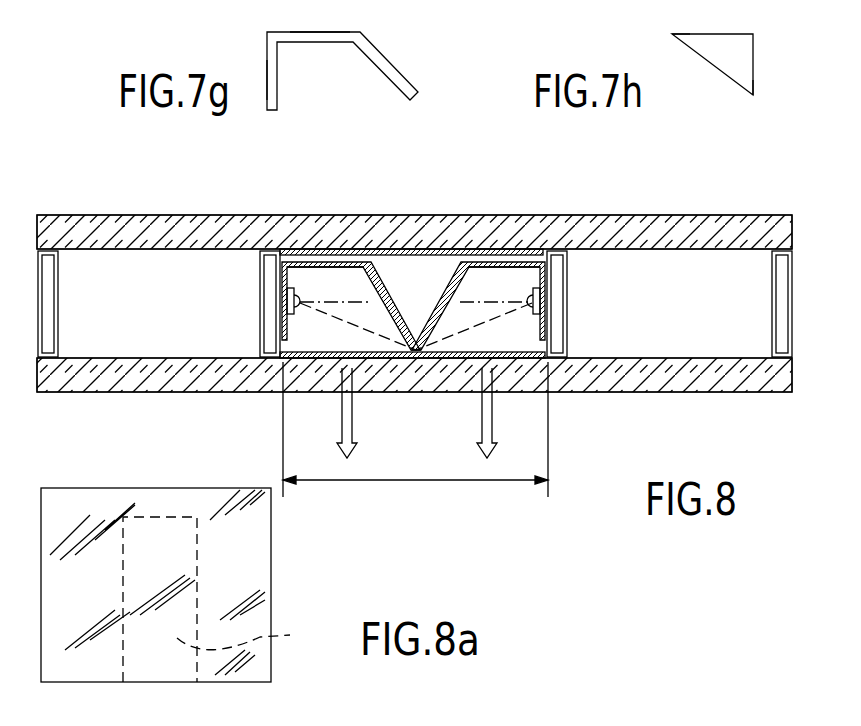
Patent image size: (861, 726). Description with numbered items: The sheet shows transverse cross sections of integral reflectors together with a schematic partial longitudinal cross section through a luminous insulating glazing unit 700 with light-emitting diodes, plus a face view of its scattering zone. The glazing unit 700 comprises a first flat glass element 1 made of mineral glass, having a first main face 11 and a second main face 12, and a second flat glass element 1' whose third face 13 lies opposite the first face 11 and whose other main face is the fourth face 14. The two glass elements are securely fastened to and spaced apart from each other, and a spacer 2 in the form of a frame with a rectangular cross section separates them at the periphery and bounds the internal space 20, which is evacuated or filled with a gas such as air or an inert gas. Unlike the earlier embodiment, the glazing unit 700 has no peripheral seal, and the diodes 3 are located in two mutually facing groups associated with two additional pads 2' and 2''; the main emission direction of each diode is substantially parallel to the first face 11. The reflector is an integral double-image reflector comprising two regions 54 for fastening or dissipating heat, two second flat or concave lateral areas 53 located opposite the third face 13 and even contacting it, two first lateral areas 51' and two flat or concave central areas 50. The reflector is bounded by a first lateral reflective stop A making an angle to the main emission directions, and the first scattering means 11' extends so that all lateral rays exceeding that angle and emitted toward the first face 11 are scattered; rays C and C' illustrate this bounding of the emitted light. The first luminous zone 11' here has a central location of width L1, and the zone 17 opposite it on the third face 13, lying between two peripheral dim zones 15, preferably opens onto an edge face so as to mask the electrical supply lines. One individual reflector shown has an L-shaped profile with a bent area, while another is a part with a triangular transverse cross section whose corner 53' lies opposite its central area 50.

In FIG. 8, the luminous insulating glazing unit 700 is at (110, 200).
In FIG. 8, the first flat glass element 1 is at (414, 321).
In FIG. 8A, the first flat glass element 1 is at (174, 585).
In FIG. 8, the second flat glass element 1' is at (619, 200).
In FIG. 8, the spacer 2 is at (415, 304).
In FIG. 8, the additional pad 2' is at (245, 304).
In FIG. 8, the additional pad 2'' is at (587, 304).
In FIG. 8, the light-emitting diodes 3 is at (313, 353).
In FIG. 8, the first main face 11 is at (791, 337).
In FIG. 8, the first scattering means 11' is at (417, 408).
In FIG. 8A, the first scattering means 11' is at (251, 637).
In FIG. 8, the second main face 12 is at (728, 390).
In FIG. 8, the third face 13 is at (780, 255).
In FIG. 8, the fourth face 14 is at (723, 215).
In FIG. 8, the dim zone 15 is at (118, 252).
In FIG. 8A, the dim zone 15 is at (80, 520).
In FIG. 8, the zone opposite the first luminous zone 17 is at (413, 249).
In FIG. 8, the gas filled space 20 is at (152, 277).
In FIG. 7G, the central area of reflector 50 is at (405, 68).
In FIG. 7H, the central area of reflector 50 is at (710, 67).
In FIG. 8, the central area of reflector 50 is at (370, 292).
In FIG. 7H, the first lateral area of reflector 51' is at (653, 29).
In FIG. 7G, the second lateral area of reflector 53 is at (320, 57).
In FIG. 8, the second lateral area of reflector 53 is at (409, 220).
In FIG. 7H, the reflector corner 53' is at (771, 109).
In FIG. 7G, the fastening or heat-dissipating area 54 is at (267, 78).
In FIG. 8, the fastening or heat-dissipating area 54 is at (287, 315).
In FIG. 8, the first lateral reflective stop A is at (417, 352).
In FIG. 8, the light beam boundary C is at (409, 400).
In FIG. 8, the light beam boundary C' is at (454, 400).
In FIG. 8, the width of first luminous zone L1 is at (415, 435).